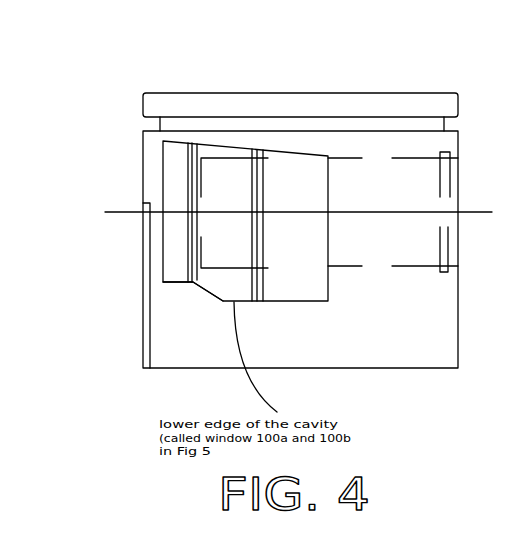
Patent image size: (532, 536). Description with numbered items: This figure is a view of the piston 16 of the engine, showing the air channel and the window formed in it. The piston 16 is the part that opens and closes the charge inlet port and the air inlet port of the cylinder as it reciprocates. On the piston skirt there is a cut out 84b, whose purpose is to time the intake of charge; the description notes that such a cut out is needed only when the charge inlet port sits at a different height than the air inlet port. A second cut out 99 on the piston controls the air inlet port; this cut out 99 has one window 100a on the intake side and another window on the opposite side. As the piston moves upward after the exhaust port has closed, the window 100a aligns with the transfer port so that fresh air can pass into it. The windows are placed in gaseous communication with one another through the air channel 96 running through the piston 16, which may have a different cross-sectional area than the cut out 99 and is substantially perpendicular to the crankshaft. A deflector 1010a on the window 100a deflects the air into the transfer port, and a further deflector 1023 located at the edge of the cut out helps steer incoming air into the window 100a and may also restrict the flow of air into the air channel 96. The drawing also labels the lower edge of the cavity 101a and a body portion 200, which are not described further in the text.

The piston 16 is at (447, 140).
The cut out 84b is at (147, 216).
The air channel 96 is at (173, 167).
The cut out 99 is at (172, 262).
The deflector 1010a is at (256, 220).
The deflector 1023 is at (185, 279).
The window 100a is at (213, 148).
The window 101a is at (372, 158).
The body 200 is at (377, 255).